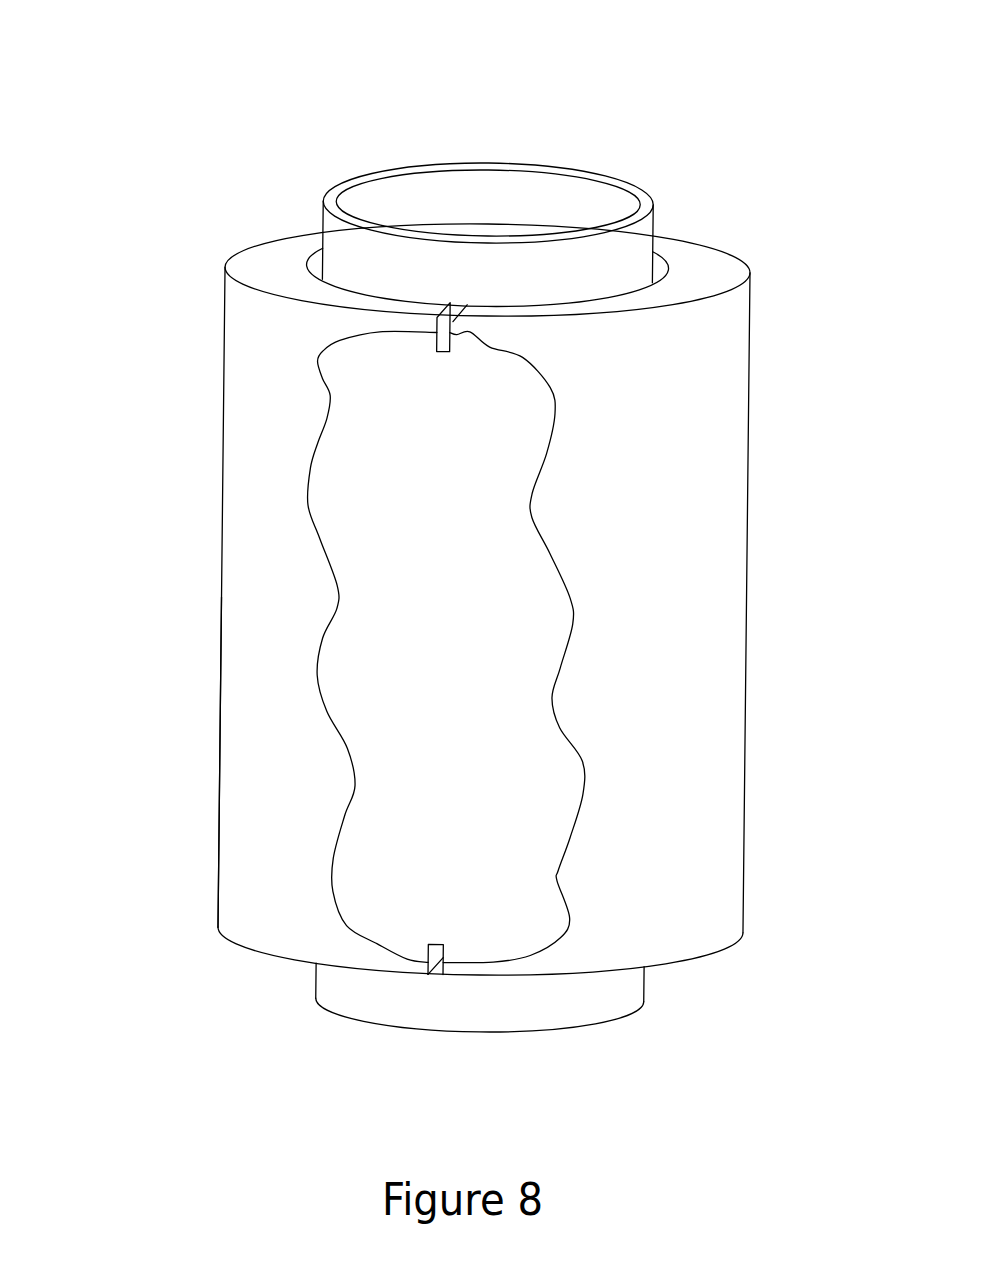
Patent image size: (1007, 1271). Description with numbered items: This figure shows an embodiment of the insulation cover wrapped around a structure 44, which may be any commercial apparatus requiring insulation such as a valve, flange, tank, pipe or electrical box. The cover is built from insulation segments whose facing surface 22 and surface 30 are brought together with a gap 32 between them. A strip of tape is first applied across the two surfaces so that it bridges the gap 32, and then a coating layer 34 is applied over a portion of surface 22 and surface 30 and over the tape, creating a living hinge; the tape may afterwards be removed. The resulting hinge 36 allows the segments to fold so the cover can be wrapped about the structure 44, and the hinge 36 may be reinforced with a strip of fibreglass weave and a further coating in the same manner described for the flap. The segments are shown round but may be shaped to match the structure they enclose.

The surface 22 is at (678, 670).
The surface 30 is at (245, 748).
The gap 32 is at (457, 297).
The coating layer 34 is at (378, 562).
The hinge 36 is at (440, 945).
The structure 44 is at (495, 197).